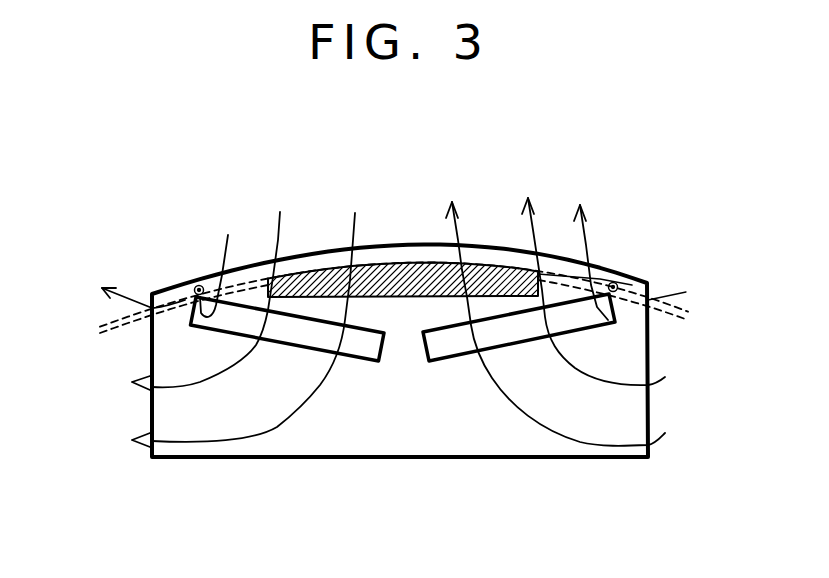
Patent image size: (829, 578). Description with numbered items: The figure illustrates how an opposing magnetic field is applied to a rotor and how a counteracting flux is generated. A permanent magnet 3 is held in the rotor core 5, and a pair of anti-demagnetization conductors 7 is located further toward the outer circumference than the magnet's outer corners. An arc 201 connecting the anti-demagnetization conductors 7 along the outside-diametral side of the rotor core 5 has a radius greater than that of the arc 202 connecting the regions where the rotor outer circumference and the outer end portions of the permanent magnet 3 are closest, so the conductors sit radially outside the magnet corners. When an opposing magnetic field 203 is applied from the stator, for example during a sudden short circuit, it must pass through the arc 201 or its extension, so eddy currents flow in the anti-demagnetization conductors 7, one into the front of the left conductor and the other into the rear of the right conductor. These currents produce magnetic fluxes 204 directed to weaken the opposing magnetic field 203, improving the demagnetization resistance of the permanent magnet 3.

The permanent magnet 3 is at (443, 348).
The rotor core 5 is at (627, 412).
The anti-demagnetization conductor 7 is at (196, 288).
The arc connecting the anti-demagnetization conductors 201 is at (677, 307).
The arc connecting outer corners of the permanent magnets 202 is at (665, 308).
The opposing magnetic field 203 is at (597, 202).
The magnetic flux 204 is at (124, 300).